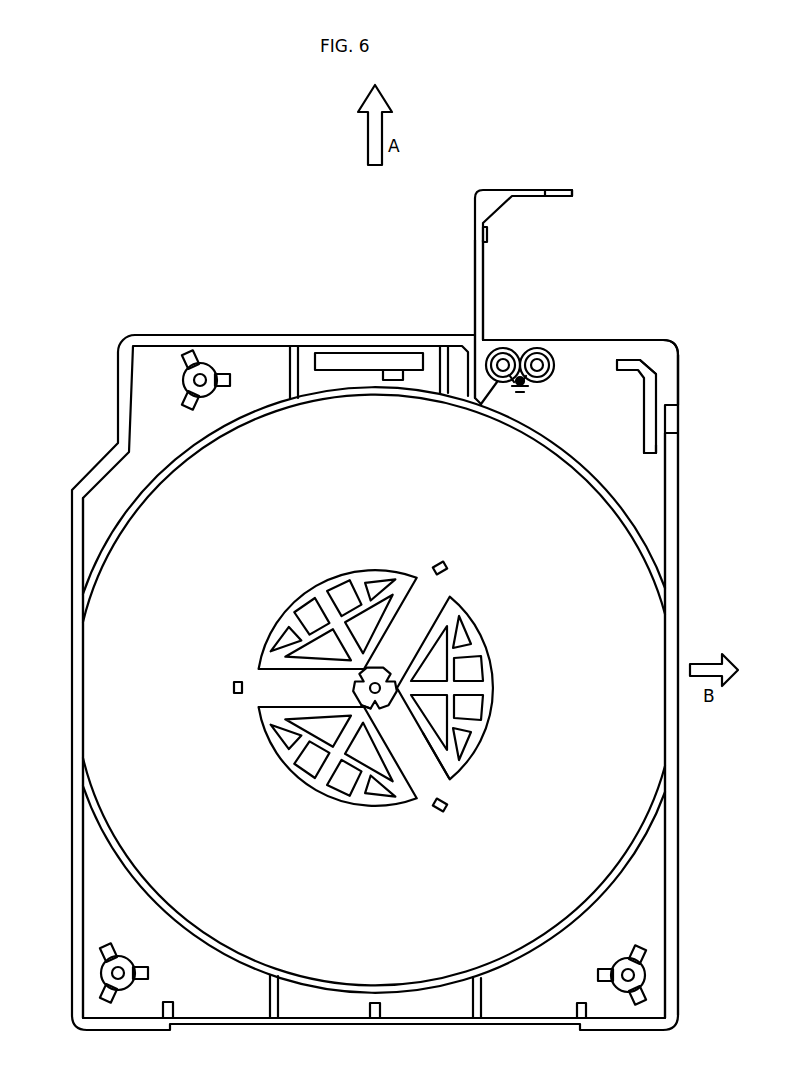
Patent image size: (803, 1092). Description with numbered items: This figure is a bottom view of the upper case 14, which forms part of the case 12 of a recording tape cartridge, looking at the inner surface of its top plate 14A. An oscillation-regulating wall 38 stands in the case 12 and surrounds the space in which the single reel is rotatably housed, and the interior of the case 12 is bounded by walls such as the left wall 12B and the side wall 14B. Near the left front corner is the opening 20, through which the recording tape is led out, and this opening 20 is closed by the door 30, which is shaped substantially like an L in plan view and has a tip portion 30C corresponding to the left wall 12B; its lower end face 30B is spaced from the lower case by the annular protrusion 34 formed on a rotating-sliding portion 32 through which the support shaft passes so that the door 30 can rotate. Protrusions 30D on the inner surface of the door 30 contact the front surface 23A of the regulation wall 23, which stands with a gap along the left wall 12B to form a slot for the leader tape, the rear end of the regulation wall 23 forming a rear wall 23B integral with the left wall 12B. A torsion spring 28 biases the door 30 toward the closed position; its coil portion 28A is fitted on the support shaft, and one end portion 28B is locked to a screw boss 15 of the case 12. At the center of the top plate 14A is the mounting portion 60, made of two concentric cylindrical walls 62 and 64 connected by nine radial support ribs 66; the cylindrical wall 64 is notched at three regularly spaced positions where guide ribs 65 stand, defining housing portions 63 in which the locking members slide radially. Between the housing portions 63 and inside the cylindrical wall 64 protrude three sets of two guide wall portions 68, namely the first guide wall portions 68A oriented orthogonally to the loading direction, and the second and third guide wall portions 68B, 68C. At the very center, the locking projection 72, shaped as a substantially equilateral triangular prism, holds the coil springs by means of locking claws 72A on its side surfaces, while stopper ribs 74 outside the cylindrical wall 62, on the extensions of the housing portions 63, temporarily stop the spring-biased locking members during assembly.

The case 12 is at (381, 649).
The upper case 14 is at (201, 330).
The top plate 14A is at (105, 696).
The side wall of case member 14B is at (678, 760).
The left wall 12B is at (704, 686).
The screw boss 15 is at (546, 350).
The opening 20 is at (586, 342).
The regulation wall 23 is at (652, 370).
The front surface 23A is at (628, 360).
The rear wall 23B is at (656, 455).
The torsion spring 28 is at (522, 385).
The coil portion 28A is at (512, 378).
The one end portion 28B is at (530, 383).
The door 30 is at (488, 185).
The lower end face 30B is at (474, 277).
The tip portion 30C is at (575, 193).
The protrusion 30D is at (490, 234).
The rotating-sliding portion 32 is at (496, 349).
The annular protrusion 34 is at (497, 383).
The oscillation-regulating wall 38 is at (172, 490).
The mounting portion 60 is at (395, 692).
The cylindrical wall 62 is at (462, 612).
The housing portion 63 is at (268, 700).
The cylindrical wall 64 is at (275, 655).
The guide rib 65 is at (432, 770).
The support rib 66 is at (268, 740).
The guide wall portion 68 is at (430, 704).
The first guide wall portion 68A is at (468, 705).
The second guide wall portion 68B is at (352, 650).
The third guide wall portion 68C is at (348, 752).
The locking projection 72 is at (387, 672).
The locking claw 72A is at (375, 712).
The stopper rib 74 is at (445, 565).